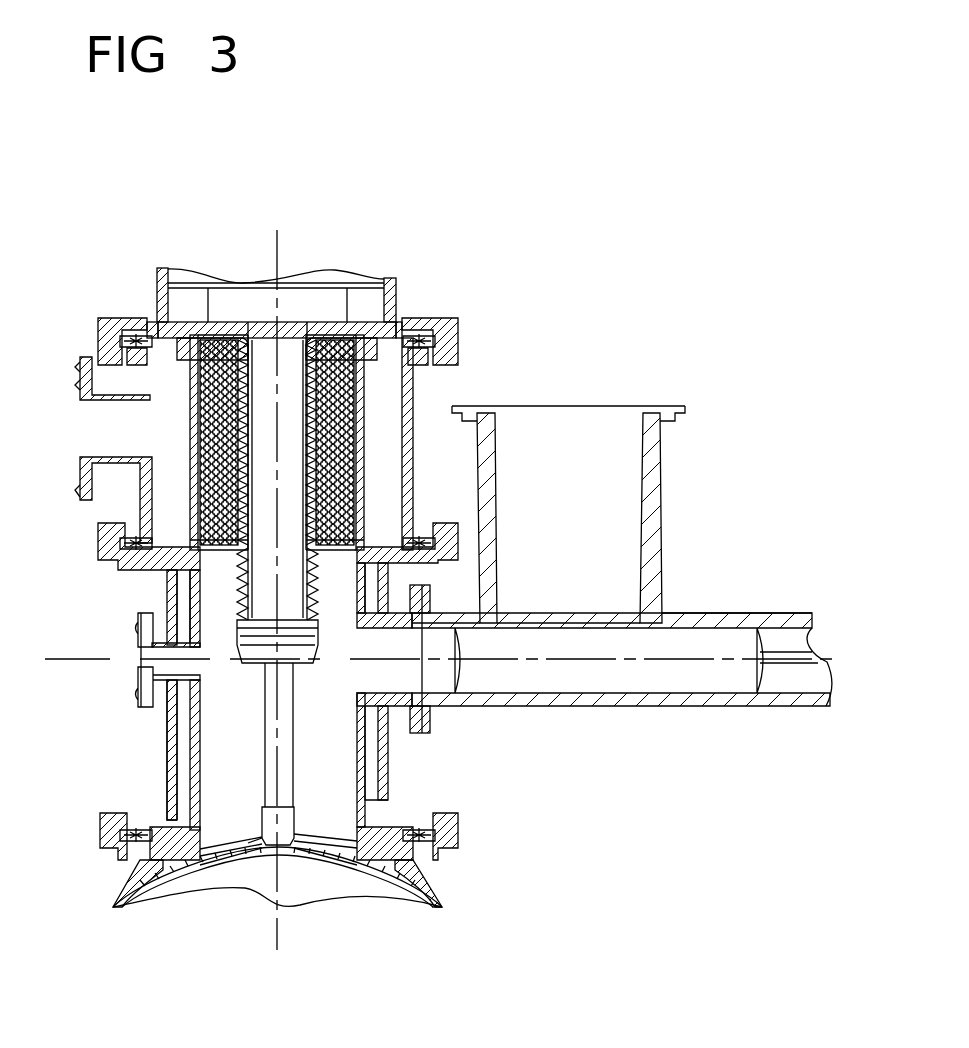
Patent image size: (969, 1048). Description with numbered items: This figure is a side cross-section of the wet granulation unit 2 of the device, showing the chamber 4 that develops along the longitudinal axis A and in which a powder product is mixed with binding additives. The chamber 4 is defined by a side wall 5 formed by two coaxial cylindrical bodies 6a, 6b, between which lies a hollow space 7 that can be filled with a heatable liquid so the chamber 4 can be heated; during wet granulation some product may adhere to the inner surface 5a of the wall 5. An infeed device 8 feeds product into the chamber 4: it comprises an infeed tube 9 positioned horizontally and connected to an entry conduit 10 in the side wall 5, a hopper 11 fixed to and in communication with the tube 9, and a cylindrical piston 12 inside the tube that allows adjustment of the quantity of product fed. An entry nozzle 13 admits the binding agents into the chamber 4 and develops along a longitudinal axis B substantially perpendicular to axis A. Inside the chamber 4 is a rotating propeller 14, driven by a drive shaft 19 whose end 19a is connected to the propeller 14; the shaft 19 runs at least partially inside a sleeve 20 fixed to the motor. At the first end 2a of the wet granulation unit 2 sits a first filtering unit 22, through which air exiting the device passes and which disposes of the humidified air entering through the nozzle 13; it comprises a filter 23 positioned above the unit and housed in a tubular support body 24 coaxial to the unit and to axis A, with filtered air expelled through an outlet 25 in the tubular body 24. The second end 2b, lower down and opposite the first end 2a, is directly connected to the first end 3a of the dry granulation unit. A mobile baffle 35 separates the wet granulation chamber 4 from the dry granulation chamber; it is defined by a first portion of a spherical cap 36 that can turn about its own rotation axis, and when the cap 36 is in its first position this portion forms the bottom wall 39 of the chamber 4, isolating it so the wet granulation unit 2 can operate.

The wet granulation unit 2 is at (153, 796).
The first end of the wet granulation unit 2a is at (196, 393).
The second end of the wet granulation unit 2b is at (455, 860).
The first end of the dry granulation unit 3a is at (243, 890).
The chamber 4 is at (342, 738).
The side wall 5 is at (163, 773).
The inner surface of the wall 5a is at (188, 752).
The cylindrical body 6a is at (169, 581).
The cylindrical body 6b is at (196, 613).
The hollow space 7 is at (390, 805).
The infeed device 8 is at (727, 546).
The infeed tube 9 is at (735, 698).
The entry conduit 10 is at (422, 735).
The hopper 11 is at (650, 492).
The cylindrical piston 12 is at (632, 678).
The entry nozzle 13 is at (140, 671).
The rotating propeller 14 is at (252, 824).
The drive shaft 19 is at (285, 700).
The end of the drive shaft 19a is at (287, 792).
The sleeve 20 is at (292, 525).
The first filtering unit 22 is at (378, 421).
The filter 23 is at (228, 345).
The tubular support body 24 is at (396, 328).
The outlet 25 is at (110, 445).
The mobile baffle 35 is at (267, 860).
The spherical cap 36 is at (396, 893).
The bottom wall 39 is at (323, 850).
The longitudinal axis A is at (282, 262).
The longitudinal axis of the nozzle B is at (62, 652).